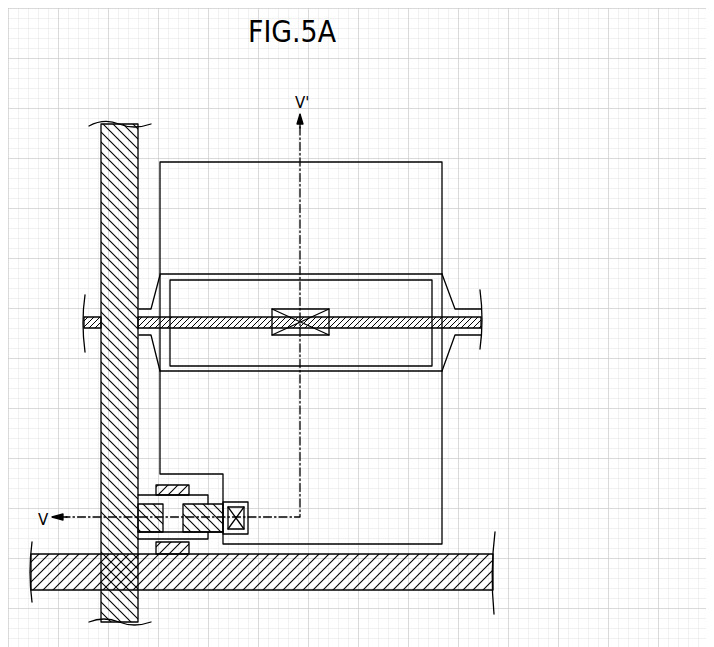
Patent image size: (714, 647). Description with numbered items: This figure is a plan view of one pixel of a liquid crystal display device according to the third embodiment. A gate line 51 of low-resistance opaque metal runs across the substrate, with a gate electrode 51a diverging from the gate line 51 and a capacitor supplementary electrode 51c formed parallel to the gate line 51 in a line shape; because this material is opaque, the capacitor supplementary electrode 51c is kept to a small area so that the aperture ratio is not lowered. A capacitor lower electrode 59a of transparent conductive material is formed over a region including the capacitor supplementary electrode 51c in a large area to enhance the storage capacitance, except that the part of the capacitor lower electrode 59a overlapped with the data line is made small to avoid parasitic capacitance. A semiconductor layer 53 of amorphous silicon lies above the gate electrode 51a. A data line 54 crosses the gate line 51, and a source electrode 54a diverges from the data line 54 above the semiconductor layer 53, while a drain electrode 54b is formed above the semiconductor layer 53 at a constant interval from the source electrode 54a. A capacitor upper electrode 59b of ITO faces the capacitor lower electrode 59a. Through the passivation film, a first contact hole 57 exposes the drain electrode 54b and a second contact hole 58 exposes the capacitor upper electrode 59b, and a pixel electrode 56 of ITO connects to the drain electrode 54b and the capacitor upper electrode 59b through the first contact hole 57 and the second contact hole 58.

The gate line 51 is at (398, 577).
The gate electrode 51a is at (173, 548).
The capacitor supplementary electrode 51c is at (478, 303).
The semiconductor layer 53 is at (173, 483).
The data line 54 is at (117, 422).
The source electrode 54a is at (135, 512).
The drain electrode 54b is at (215, 529).
The pixel electrode 56 is at (442, 448).
The first contact hole 57 is at (240, 529).
The second contact hole 58 is at (318, 306).
The capacitor lower electrode 59a is at (445, 280).
The capacitor upper electrode 59b is at (240, 280).